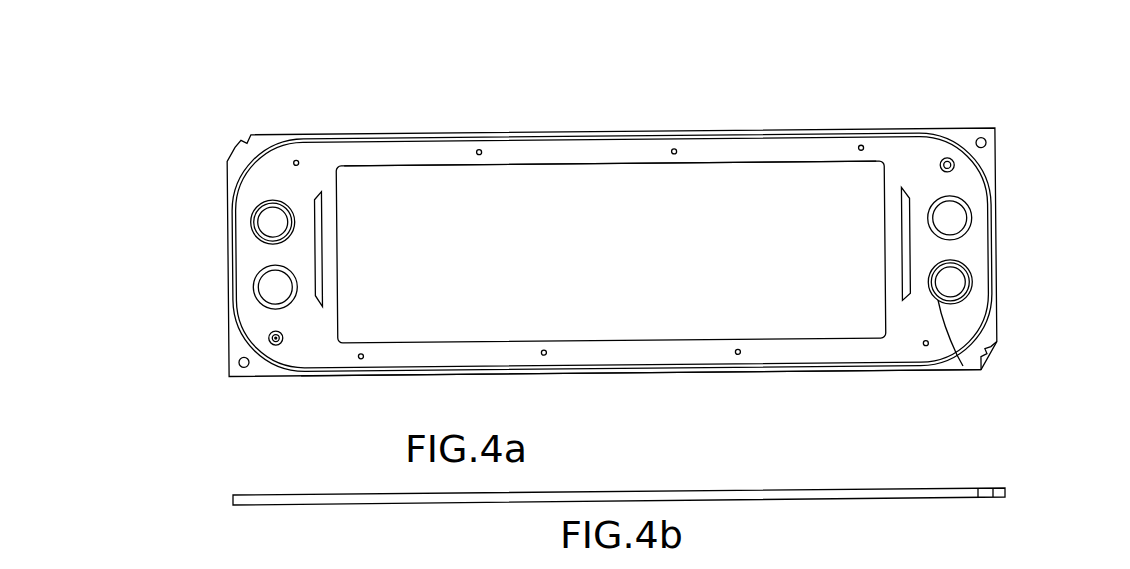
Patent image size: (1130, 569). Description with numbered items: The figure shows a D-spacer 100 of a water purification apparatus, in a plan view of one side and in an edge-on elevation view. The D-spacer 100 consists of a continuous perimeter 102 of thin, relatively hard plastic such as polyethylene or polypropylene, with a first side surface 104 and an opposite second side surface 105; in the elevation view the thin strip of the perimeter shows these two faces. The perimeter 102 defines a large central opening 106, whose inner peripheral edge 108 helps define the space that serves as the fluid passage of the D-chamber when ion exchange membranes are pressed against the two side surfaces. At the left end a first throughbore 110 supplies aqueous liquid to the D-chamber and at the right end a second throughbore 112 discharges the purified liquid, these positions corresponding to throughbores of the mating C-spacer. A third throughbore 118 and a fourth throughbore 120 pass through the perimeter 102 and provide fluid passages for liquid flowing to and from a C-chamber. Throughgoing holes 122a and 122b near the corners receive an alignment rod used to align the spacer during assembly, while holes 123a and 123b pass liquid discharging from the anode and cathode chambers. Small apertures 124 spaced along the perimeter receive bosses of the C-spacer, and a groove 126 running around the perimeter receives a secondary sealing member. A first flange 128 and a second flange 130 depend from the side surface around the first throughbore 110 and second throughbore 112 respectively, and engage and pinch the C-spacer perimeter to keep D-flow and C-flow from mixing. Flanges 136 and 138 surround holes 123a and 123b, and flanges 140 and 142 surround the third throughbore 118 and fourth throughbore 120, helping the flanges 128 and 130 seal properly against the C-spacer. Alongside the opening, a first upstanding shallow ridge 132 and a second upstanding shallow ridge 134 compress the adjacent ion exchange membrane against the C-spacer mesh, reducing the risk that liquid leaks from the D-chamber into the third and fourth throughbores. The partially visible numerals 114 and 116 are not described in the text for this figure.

In FIG. 4a, the D-spacer 100 is at (784, 91).
In FIG. 4a, the continuous perimeter 102 is at (898, 147).
In FIG. 4a, the first side surface 104 is at (570, 153).
In FIG. 4b, the first side surface 104 is at (968, 489).
In FIG. 4b, the second side surface 105 is at (968, 497).
In FIG. 4a, the opening 106 is at (640, 287).
In FIG. 4a, the inner peripheral edge 108 is at (597, 165).
In FIG. 4a, the first throughbore 110 is at (272, 292).
In FIG. 4a, the second throughbore 112 is at (955, 220).
In FIG. 4b, the element 114 is at (353, 559).
In FIG. 4b, the element 116 is at (1035, 559).
In FIG. 4a, the third throughbore 118 is at (273, 212).
In FIG. 4a, the fourth throughbore 120 is at (958, 282).
In FIG. 4a, the throughgoing hole 122a is at (238, 362).
In FIG. 4a, the throughgoing hole 122b is at (988, 143).
In FIG. 4a, the throughgoing hole 123a is at (275, 345).
In FIG. 4a, the throughgoing hole 123b is at (950, 160).
In FIG. 4a, the apertures 124 is at (297, 160).
In FIG. 4a, the groove 126 is at (648, 372).
In FIG. 4a, the first flange 128 is at (266, 270).
In FIG. 4a, the second flange 130 is at (962, 237).
In FIG. 4a, the first upstanding shallow ridge 132 is at (323, 224).
In FIG. 4a, the second upstanding shallow ridge 134 is at (930, 264).
In FIG. 4a, the flange 136 is at (268, 337).
In FIG. 4a, the flange 138 is at (957, 168).
In FIG. 4a, the flange 140 is at (253, 217).
In FIG. 4a, the flange 142 is at (985, 368).